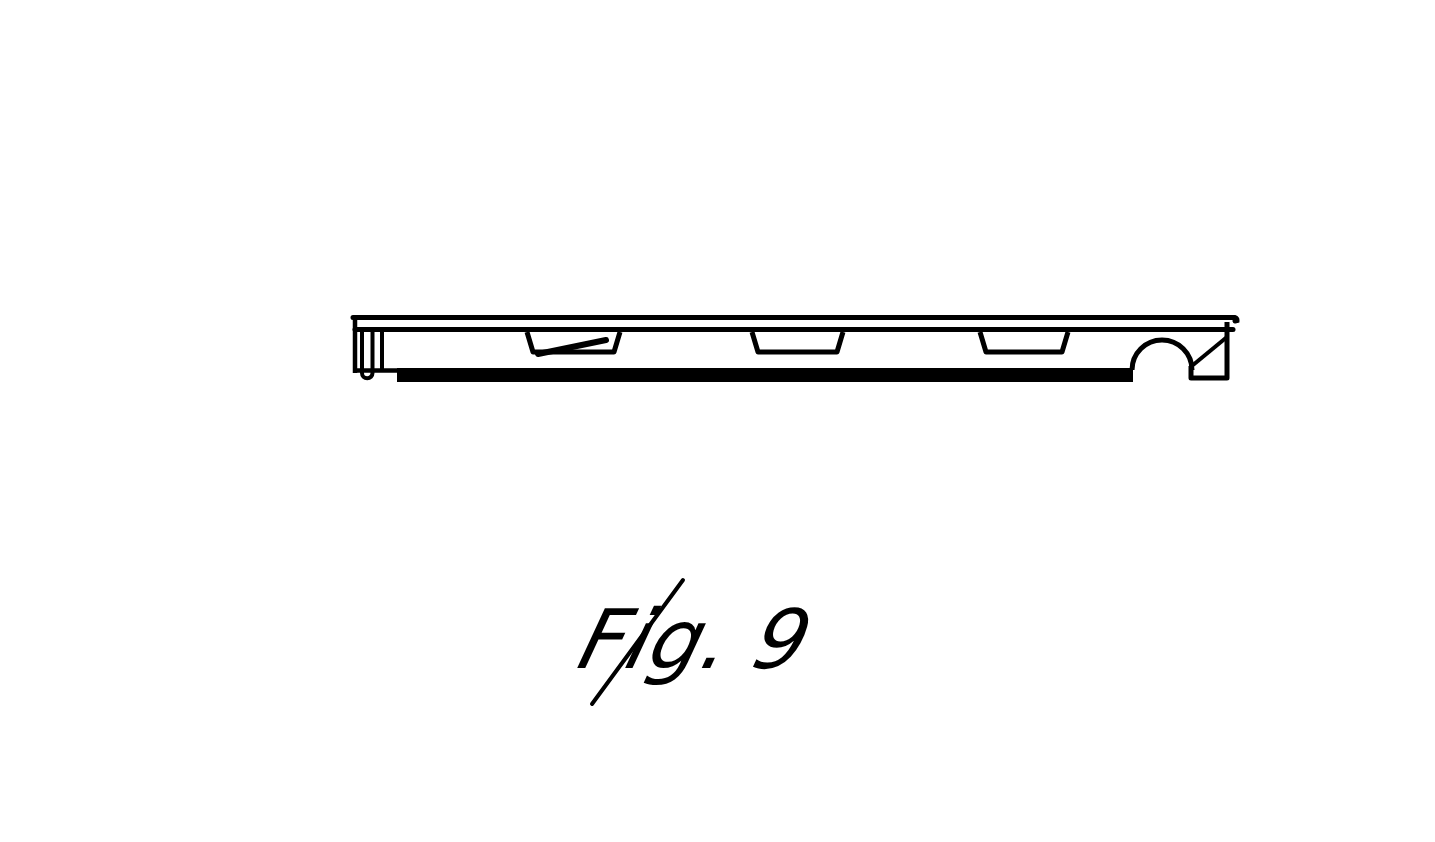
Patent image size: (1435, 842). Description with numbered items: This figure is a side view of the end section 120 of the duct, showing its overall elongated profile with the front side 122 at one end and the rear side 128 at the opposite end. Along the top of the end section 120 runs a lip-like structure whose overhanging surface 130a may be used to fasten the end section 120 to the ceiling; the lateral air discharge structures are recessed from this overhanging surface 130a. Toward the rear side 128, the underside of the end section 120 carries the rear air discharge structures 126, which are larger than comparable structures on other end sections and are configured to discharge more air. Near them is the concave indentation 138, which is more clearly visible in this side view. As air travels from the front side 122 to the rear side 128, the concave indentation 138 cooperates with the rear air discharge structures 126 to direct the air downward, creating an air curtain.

The end section 120 is at (1205, 108).
The front side 122 is at (353, 320).
The rear air discharge structures 126 is at (1315, 393).
The rear side 128 is at (1292, 260).
The overhanging surface 130a is at (723, 315).
The concave indentation 138 is at (1163, 395).